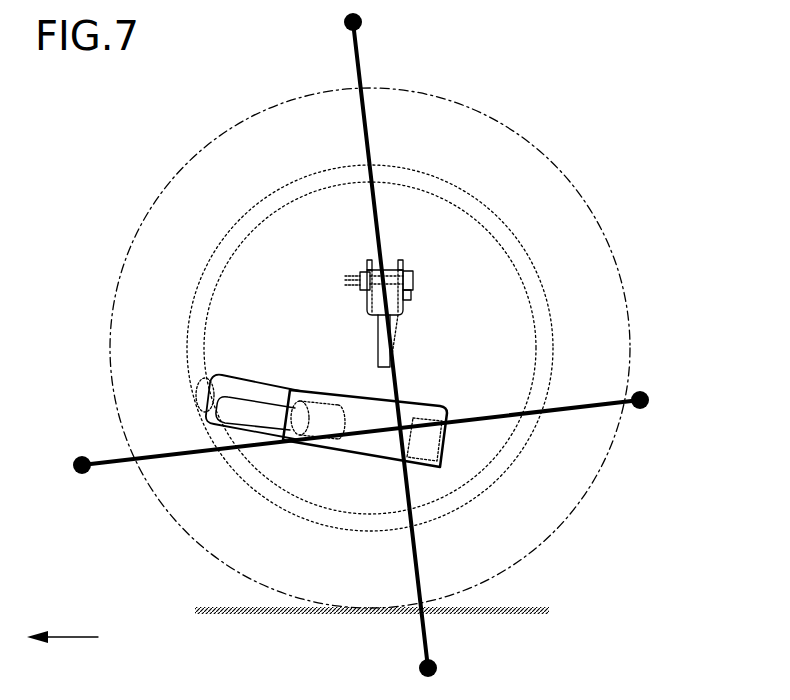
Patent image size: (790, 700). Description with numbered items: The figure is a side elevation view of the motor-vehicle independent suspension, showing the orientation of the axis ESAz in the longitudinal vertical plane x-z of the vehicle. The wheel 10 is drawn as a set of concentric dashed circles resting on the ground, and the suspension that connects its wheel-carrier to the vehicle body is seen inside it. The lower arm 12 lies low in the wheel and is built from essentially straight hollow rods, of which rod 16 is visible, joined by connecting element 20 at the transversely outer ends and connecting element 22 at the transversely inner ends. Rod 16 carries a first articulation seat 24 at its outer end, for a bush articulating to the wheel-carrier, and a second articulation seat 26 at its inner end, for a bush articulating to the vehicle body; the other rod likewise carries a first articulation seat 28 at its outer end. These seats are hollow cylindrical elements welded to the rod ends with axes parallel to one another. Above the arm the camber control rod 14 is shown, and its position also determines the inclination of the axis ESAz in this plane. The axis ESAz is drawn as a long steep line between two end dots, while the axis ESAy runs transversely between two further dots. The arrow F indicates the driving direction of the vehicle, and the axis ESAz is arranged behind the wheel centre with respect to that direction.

The wheel 10 is at (527, 153).
The lower arm 12 is at (292, 340).
The camber control rod 14 is at (424, 313).
The rod 16 is at (247, 408).
The connecting element 20 is at (370, 441).
The connecting element 22 is at (270, 387).
The first articulation seat 24 is at (317, 425).
The second articulation seat 26 is at (205, 394).
The first articulation seat 28 is at (447, 441).
The axis ESAy is at (565, 409).
The axis ESAz is at (360, 58).
The arrow F is at (62, 625).